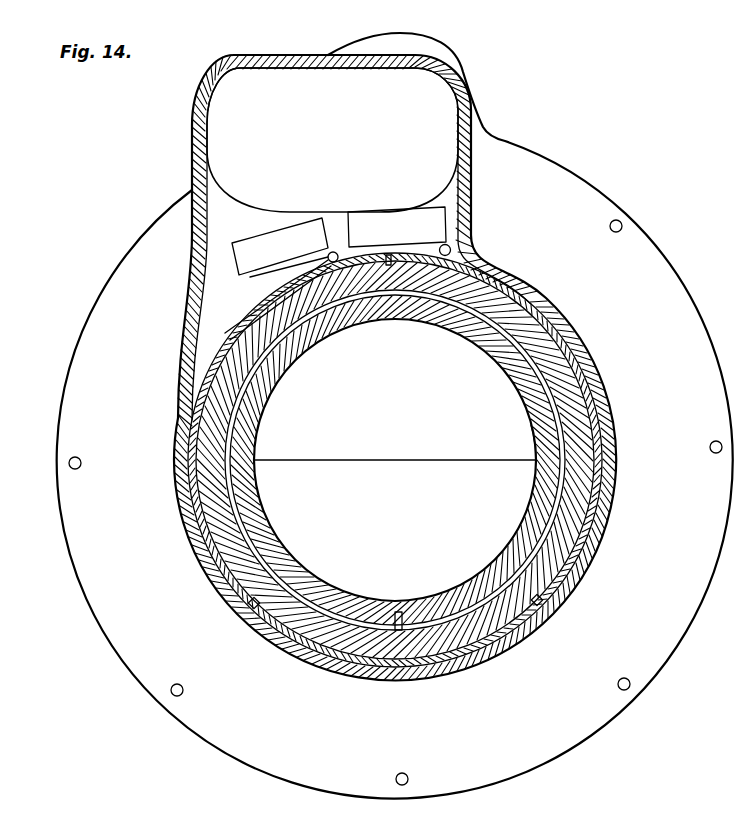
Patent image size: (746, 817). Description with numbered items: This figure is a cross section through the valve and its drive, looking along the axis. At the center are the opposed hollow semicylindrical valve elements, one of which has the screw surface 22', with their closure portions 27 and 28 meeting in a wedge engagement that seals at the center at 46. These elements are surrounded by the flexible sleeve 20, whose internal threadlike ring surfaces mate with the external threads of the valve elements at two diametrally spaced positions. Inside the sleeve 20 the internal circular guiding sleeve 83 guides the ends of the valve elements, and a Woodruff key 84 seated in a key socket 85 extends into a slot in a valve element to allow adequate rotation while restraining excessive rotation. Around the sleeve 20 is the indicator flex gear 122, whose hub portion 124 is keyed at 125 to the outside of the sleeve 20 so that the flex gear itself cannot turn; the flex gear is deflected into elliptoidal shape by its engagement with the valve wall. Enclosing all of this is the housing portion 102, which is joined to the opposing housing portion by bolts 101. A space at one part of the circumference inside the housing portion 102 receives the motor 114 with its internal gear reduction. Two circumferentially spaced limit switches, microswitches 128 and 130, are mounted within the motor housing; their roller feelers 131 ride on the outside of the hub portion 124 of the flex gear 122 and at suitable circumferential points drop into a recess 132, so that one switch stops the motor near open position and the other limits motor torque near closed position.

The bolts 101 is at (648, 690).
The housing portion 102 is at (473, 207).
The motor 114 is at (332, 140).
The limit switch 128 is at (280, 247).
The limit switch 130 is at (397, 227).
The roller feelers 131 is at (334, 252).
The recess 132 is at (300, 283).
The key 125 is at (390, 257).
The sleeve 20 is at (583, 331).
The hub portion 124 is at (592, 414).
The flex gear 122 is at (596, 474).
The key socket 85 is at (387, 622).
The Woodruff key 84 is at (401, 612).
The closure portion 27 is at (395, 460).
The closure portion 28 is at (392, 516).
The guiding sleeve 83 is at (464, 375).
The sealing 46 is at (448, 456).
The screw surface 22' is at (511, 437).